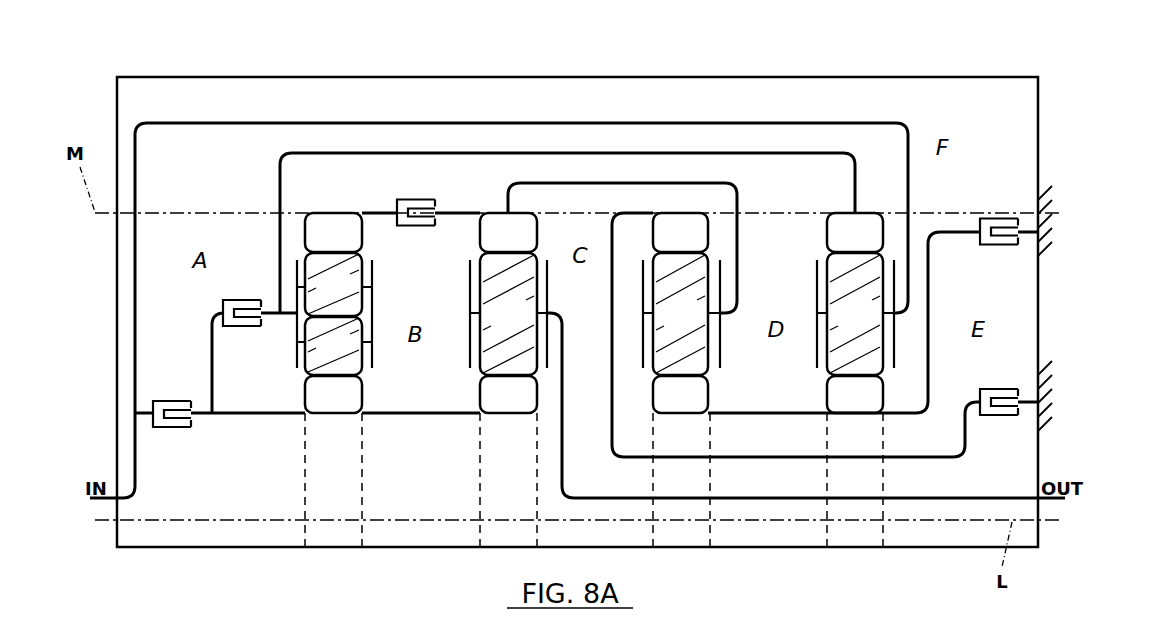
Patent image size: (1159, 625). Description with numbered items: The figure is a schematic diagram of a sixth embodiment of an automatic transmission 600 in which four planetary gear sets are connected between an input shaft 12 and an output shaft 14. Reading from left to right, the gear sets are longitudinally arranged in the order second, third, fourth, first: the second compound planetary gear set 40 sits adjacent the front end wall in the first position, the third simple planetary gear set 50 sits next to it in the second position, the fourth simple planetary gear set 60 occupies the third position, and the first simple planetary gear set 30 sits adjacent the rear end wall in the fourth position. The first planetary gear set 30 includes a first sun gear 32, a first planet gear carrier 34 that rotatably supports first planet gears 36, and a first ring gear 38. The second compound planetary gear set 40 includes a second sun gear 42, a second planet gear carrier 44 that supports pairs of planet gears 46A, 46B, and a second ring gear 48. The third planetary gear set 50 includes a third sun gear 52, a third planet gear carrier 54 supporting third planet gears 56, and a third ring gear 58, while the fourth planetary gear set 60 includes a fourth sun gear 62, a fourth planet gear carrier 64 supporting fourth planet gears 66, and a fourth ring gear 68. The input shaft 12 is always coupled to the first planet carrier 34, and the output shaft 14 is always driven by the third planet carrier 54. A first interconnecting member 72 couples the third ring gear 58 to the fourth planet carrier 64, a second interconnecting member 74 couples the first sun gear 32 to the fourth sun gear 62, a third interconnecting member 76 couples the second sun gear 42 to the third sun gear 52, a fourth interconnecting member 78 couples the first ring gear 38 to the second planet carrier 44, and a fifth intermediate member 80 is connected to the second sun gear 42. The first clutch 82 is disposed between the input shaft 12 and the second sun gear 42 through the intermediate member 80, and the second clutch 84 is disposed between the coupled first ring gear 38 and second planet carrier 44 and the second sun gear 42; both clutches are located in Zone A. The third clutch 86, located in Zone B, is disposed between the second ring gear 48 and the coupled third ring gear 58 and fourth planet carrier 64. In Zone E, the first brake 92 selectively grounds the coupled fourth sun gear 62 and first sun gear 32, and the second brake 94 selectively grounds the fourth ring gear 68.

The automatic transmission 600 is at (1077, 111).
The input shaft 12 is at (200, 123).
The output shaft 14 is at (1062, 503).
The first simple planetary gear set 30 is at (866, 332).
The first sun gear 32 is at (843, 406).
The first planet gear carrier 34 is at (896, 357).
The first plurality of pinion or planet gears 36 is at (843, 326).
The first ring gear 38 is at (843, 244).
The second compound planetary gear set 40 is at (299, 335).
The second sun gear 42 is at (321, 406).
The second planet gear carrier 44 is at (297, 344).
The pinion or planet gear 46A is at (351, 296).
The pinion or planet gear 46B is at (351, 354).
The second ring gear 48 is at (321, 244).
The third simple planetary gear set 50 is at (505, 335).
The third sun gear 52 is at (496, 406).
The third planet gear carrier 54 is at (549, 275).
The third plurality of pinion or planet gears 56 is at (496, 326).
The third ring gear 58 is at (496, 244).
The fourth simple planetary gear set 60 is at (671, 332).
The fourth sun gear 62 is at (668, 406).
The fourth planet gear carrier 64 is at (722, 357).
The fourth plurality of pinion or planet gears 66 is at (668, 326).
The fourth ring gear 68 is at (668, 244).
The first interconnecting member 72 is at (580, 182).
The second interconnecting member 74 is at (738, 415).
The third interconnecting member 76 is at (400, 415).
The fourth interconnecting member 78 is at (356, 152).
The fifth intermediate member 80 is at (220, 415).
The first clutch 82 is at (170, 400).
The second clutch 84 is at (241, 299).
The third clutch 86 is at (410, 199).
The first brake 92 is at (1000, 247).
The second brake 94 is at (998, 418).